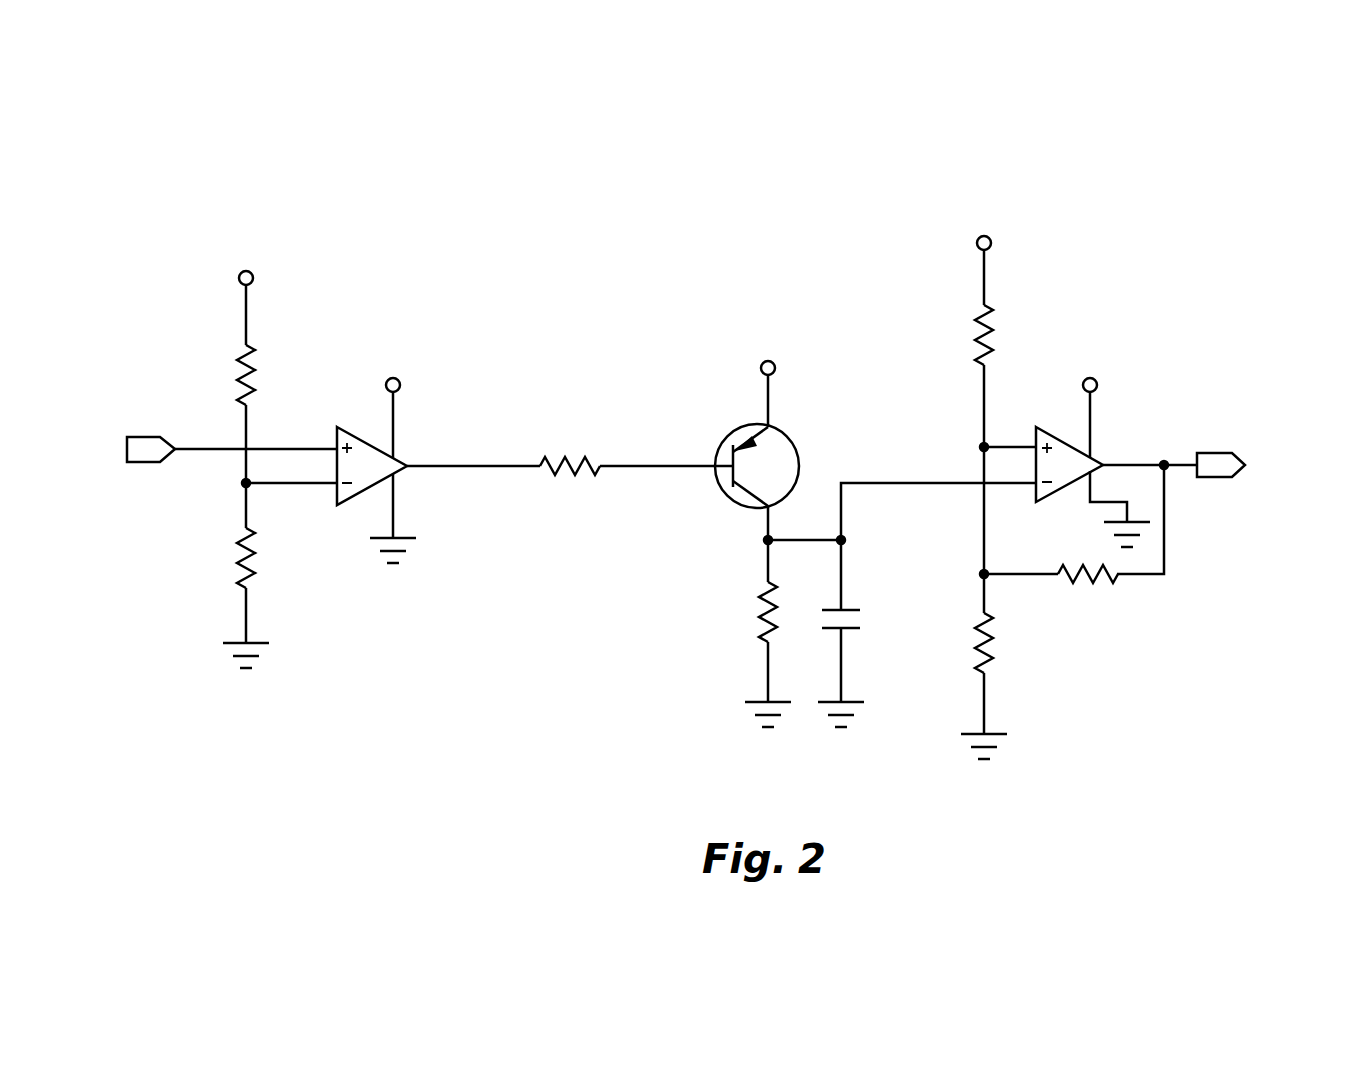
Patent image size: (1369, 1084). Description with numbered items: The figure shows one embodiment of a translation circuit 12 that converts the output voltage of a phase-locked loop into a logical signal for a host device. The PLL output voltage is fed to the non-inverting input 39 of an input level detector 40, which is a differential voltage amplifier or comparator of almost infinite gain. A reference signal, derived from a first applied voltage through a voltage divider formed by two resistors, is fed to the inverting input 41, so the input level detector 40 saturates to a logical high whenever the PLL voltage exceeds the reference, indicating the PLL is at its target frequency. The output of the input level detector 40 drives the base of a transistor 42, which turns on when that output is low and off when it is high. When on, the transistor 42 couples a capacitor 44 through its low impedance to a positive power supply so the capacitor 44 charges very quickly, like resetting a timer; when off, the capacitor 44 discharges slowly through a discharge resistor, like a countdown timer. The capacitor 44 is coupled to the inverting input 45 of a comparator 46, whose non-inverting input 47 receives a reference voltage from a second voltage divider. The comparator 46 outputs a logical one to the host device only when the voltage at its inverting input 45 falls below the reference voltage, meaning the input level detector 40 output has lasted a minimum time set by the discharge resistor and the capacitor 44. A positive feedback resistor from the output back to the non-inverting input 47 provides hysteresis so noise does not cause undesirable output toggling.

The translation circuit 12 is at (588, 268).
The non-inverting input 39 is at (306, 447).
The input level detector 40 is at (362, 440).
The inverting input 41 is at (284, 486).
The transistor 42 is at (732, 440).
The capacitor 44 is at (858, 618).
The inverting input 45 is at (1007, 486).
The comparator 46 is at (1070, 430).
The non-inverting input 47 is at (1010, 447).